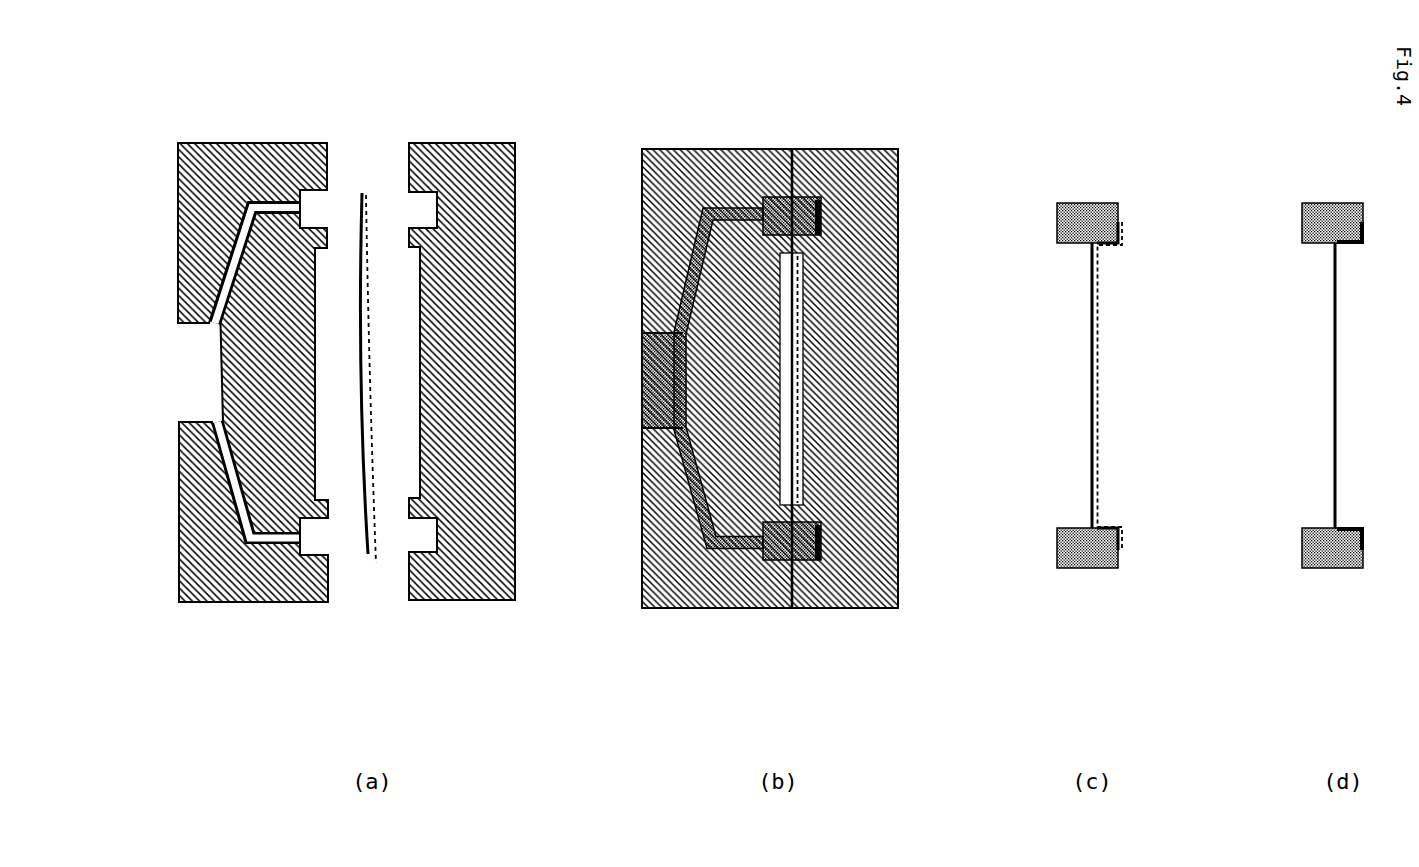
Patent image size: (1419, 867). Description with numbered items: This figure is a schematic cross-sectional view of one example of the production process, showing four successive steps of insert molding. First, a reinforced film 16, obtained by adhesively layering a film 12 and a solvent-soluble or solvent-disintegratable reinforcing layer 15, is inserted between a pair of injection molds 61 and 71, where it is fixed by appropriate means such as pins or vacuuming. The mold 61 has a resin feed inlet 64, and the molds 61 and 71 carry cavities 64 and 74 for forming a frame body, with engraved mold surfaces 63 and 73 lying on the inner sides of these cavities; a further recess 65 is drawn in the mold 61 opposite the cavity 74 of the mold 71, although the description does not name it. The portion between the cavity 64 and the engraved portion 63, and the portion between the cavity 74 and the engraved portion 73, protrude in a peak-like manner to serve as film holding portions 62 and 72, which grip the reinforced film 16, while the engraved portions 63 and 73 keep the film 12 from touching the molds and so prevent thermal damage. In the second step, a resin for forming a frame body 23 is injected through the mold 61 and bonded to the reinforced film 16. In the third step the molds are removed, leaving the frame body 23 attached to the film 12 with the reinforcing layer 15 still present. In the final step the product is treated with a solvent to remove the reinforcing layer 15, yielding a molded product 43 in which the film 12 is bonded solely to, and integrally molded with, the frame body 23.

The injection mold 61 is at (253, 143).
The injection mold 71 is at (320, 260).
The engraved mold surface 73 is at (417, 376).
The film holding portion 72 is at (317, 253).
The upper pin-holding recess of first mold 65 is at (312, 213).
The resin feed inlet 64 is at (330, 545).
The cavity 74 is at (406, 205).
The film holding portion 62 is at (328, 508).
The engraved mold surface 63 is at (325, 345).
The film 12 is at (317, 320).
The reinforcing layer 15 is at (363, 292).
The reinforced film 16 is at (373, 565).
The frame body 23 is at (1088, 568).
The molded product 43 is at (1336, 191).